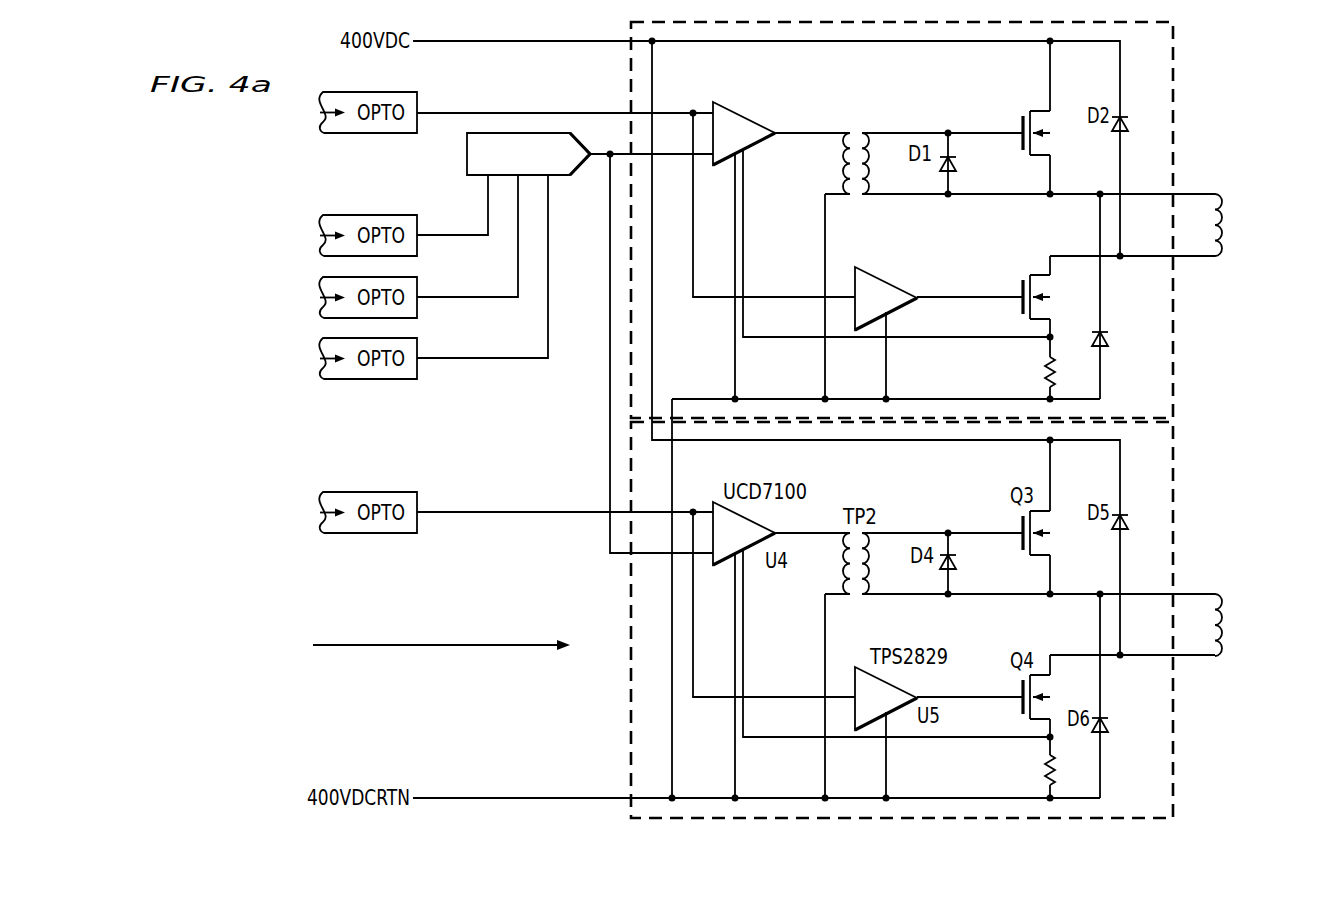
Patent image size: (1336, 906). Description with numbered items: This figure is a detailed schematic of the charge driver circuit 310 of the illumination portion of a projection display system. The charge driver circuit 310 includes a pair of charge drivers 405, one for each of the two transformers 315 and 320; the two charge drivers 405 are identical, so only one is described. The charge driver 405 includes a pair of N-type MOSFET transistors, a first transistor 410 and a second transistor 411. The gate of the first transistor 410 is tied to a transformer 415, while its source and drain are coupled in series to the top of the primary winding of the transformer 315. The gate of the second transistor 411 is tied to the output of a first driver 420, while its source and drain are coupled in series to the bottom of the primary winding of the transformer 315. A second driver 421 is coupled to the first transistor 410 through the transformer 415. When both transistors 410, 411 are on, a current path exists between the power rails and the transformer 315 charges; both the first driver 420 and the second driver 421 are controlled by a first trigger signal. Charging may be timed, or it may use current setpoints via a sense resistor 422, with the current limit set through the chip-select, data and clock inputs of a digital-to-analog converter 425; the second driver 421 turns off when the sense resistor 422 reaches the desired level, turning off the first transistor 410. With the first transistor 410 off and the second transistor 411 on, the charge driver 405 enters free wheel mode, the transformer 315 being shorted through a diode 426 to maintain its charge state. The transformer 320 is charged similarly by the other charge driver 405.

The charge driver circuit 310 is at (250, 183).
The transformer 315 is at (1222, 217).
The transformer 320 is at (1222, 631).
The charge driver 405 is at (1184, 60).
The transistor Q1 410 is at (1022, 127).
The transistor Q2 411 is at (1022, 305).
The transformer 415 is at (843, 172).
The first driver 420 is at (885, 281).
The second driver 421 is at (750, 120).
The sense resistor 422 is at (1044, 366).
The digital-to-analog converter 425 is at (467, 157).
The diode 426 is at (1106, 340).